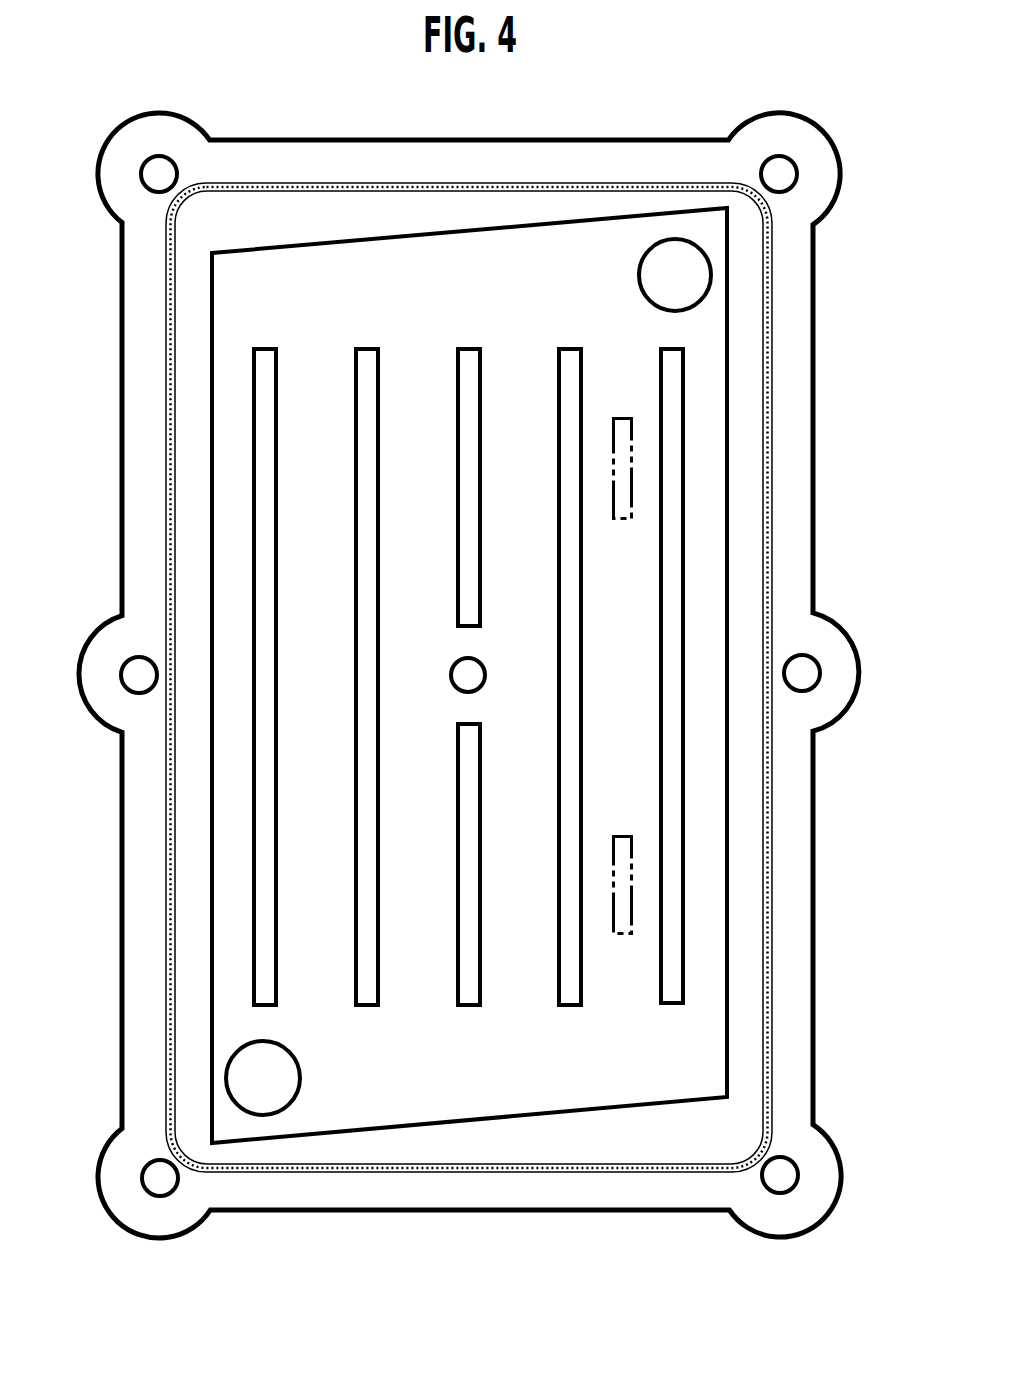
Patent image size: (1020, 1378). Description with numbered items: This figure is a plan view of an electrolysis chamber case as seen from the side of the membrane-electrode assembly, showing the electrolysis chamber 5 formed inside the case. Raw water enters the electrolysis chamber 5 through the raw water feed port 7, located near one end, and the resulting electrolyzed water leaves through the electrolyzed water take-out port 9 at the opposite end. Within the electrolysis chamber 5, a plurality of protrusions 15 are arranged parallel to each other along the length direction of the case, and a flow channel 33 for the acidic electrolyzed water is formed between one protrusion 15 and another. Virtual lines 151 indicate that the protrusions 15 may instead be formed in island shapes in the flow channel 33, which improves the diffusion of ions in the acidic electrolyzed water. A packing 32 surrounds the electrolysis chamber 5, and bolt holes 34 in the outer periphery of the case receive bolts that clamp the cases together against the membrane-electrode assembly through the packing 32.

The electrolysis chamber 5 is at (230, 306).
The raw water feed port 7 is at (285, 1045).
The electrolyzed water take-out port 9 is at (638, 275).
The protrusion 15 is at (278, 417).
The virtual line 151 is at (620, 415).
The packing 32 is at (170, 412).
The flow channel 33 is at (312, 822).
The bolt hole 34 is at (140, 176).